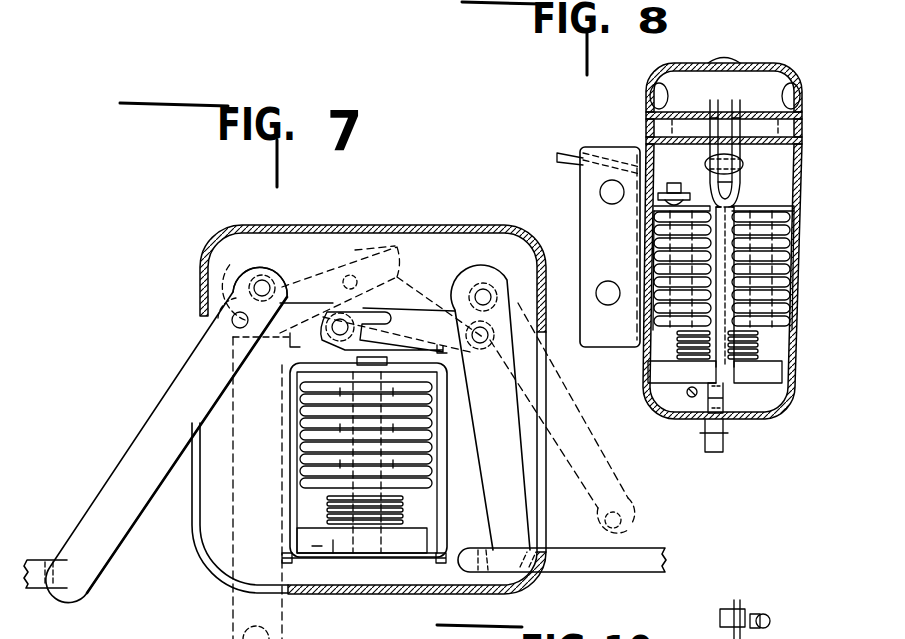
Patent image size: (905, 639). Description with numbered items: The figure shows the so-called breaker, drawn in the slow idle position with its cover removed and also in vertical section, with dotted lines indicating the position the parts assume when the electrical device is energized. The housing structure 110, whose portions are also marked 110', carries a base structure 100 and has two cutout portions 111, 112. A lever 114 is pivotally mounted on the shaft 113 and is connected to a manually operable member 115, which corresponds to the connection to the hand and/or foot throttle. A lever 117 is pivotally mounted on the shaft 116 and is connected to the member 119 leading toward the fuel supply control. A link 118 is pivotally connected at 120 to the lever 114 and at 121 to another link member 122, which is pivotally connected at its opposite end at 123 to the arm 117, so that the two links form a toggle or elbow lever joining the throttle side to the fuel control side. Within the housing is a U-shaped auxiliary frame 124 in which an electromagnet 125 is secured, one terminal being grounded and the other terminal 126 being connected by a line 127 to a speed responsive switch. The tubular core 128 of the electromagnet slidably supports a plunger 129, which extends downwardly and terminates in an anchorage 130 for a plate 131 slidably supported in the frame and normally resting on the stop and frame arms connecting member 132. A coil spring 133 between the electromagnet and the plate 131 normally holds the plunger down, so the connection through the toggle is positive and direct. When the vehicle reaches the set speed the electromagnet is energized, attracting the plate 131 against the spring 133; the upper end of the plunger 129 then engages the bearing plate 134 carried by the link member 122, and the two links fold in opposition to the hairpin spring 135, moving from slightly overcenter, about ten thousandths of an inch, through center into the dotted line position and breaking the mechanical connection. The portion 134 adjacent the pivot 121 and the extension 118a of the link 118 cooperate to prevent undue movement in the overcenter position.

In FIG. 8, the base structure 100 is at (597, 150).
In FIG. 7, the housing structure 110 is at (373, 389).
In FIG. 8, the housing structure 110 is at (722, 220).
In FIG. 8, the housing tube 110' is at (722, 75).
In FIG. 7, the cutout portion 111 is at (193, 534).
In FIG. 7, the cutout portion 112 is at (533, 506).
In FIG. 7, the shaft 113 is at (258, 286).
In FIG. 7, the lever 114 is at (136, 447).
In FIG. 8, the lever 114 is at (712, 452).
In FIG. 7, the manually operable member 115 is at (36, 560).
In FIG. 7, the shaft 116 is at (488, 292).
In FIG. 8, the shaft 116 is at (790, 132).
In FIG. 7, the lever 117 is at (486, 487).
In FIG. 8, the lever 117 is at (726, 184).
In FIG. 7, the link 118 is at (287, 297).
In FIG. 7, the extension 118a is at (392, 243).
In FIG. 7, the member 119 is at (590, 570).
In FIG. 7, the pivotal connection 120 is at (233, 320).
In FIG. 7, the pivotal connection 121 is at (343, 312).
In FIG. 7, the link member 122 is at (407, 317).
In FIG. 8, the link member 122 is at (735, 195).
In FIG. 7, the pivotal connection 123 is at (487, 336).
In FIG. 8, the pivotal connection 123 is at (743, 163).
In FIG. 7, the U-shaped auxiliary frame 124 is at (287, 500).
In FIG. 7, the electromagnet 125 is at (410, 437).
In FIG. 8, the electromagnet 125 is at (663, 256).
In FIG. 8, the terminal 126 is at (709, 165).
In FIG. 8, the line 127 is at (560, 153).
In FIG. 7, the tubular core 128 is at (340, 420).
In FIG. 8, the tubular core 128 is at (640, 307).
In FIG. 7, the plunger 129 is at (386, 405).
In FIG. 8, the plunger 129 is at (670, 224).
In FIG. 7, the anchorage 130 is at (354, 540).
In FIG. 7, the plate 131 is at (334, 550).
In FIG. 8, the plate 131 is at (760, 382).
In FIG. 7, the stop and frame arms connecting member 132 is at (320, 563).
In FIG. 8, the stop and frame arms connecting member 132 is at (690, 400).
In FIG. 7, the coil spring 133 is at (397, 517).
In FIG. 8, the coil spring 133 is at (760, 353).
In FIG. 7, the bearing plate 134 is at (342, 360).
In FIG. 7, the hairpin spring 135 is at (297, 342).